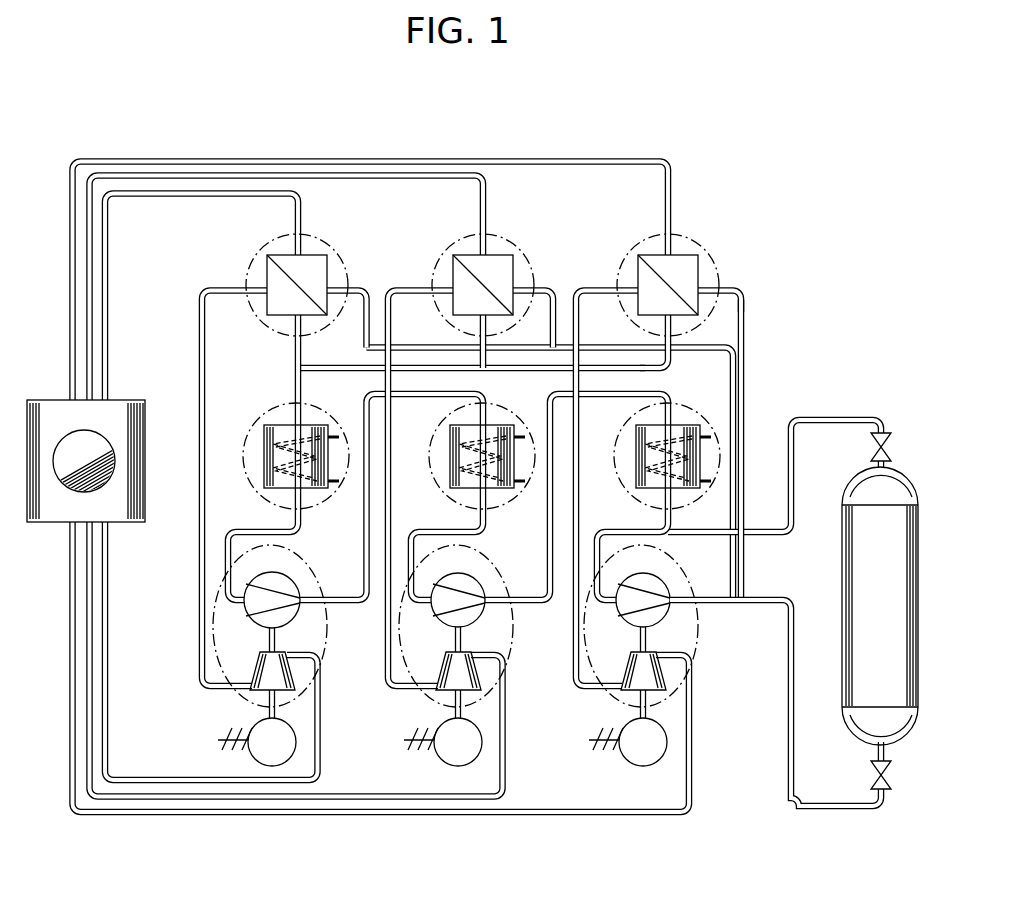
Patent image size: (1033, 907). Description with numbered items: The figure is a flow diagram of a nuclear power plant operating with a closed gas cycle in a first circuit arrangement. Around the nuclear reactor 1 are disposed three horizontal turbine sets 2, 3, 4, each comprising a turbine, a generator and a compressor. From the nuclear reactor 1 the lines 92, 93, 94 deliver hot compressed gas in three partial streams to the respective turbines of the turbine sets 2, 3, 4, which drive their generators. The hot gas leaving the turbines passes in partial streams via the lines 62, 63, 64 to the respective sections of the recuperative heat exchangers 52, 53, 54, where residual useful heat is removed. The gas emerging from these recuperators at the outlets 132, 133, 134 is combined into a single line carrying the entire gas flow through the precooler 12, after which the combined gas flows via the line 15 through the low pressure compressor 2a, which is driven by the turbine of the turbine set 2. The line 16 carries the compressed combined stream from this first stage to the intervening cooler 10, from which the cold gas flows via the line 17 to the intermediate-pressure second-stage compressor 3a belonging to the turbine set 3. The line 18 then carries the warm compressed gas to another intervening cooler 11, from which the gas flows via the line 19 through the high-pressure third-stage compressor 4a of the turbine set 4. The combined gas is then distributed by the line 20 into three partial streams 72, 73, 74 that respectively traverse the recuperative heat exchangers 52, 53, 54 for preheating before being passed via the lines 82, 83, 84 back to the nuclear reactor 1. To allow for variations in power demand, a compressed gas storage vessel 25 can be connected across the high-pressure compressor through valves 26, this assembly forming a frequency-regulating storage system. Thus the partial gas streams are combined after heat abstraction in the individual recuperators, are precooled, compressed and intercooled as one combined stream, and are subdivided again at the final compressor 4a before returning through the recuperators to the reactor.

The nuclear reactor 1 is at (50, 410).
The turbine set 2 is at (268, 640).
The low pressure compressor 2a is at (290, 604).
The turbine set 3 is at (454, 640).
The intermediate-pressure second-stage compressor 3a is at (476, 605).
The turbine set 4 is at (639, 640).
The high-pressure third-stage compressor 4a is at (660, 605).
The recuperative heat exchanger 52 is at (314, 270).
The recuperative heat exchanger 53 is at (500, 272).
The recuperative heat exchanger 54 is at (686, 270).
The line 62 is at (204, 405).
The line 63 is at (390, 412).
The line 64 is at (578, 410).
The partial stream 72 is at (364, 318).
The partial stream 73 is at (555, 305).
The partial stream 74 is at (745, 308).
The line 82 is at (296, 194).
The line 83 is at (376, 178).
The line 84 is at (578, 165).
The line 92 is at (213, 781).
The line 93 is at (118, 798).
The line 94 is at (71, 764).
The intervening cooler 10 is at (494, 435).
The intervening cooler 11 is at (677, 435).
The precooler 12 is at (308, 435).
The recuperator gas outlet 132 is at (296, 350).
The recuperator gas outlet 133 is at (487, 354).
The recuperator gas outlet 134 is at (674, 363).
The line 15 is at (228, 548).
The line 16 is at (364, 545).
The line 17 is at (442, 530).
The line 18 is at (547, 562).
The line 19 is at (640, 528).
The line 20 is at (745, 398).
The compressed gas storage vessel 25 is at (858, 585).
The valves 26 is at (876, 447).